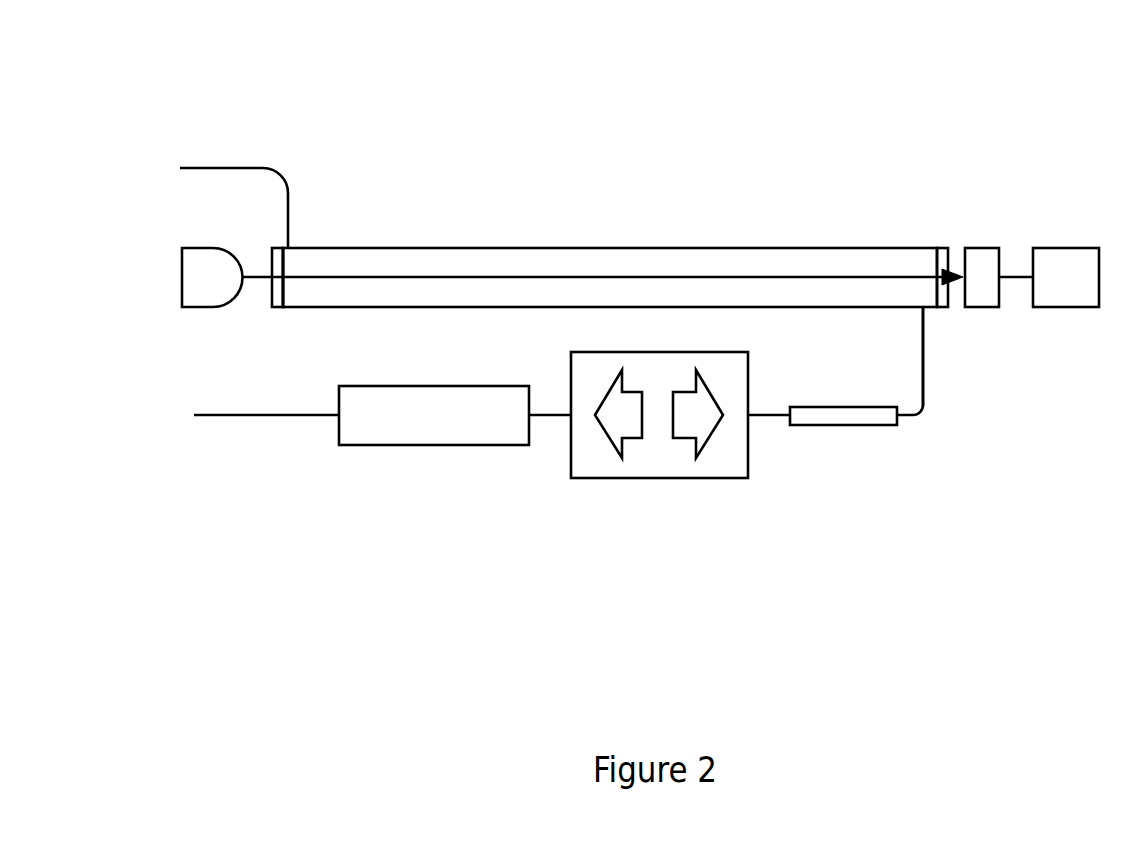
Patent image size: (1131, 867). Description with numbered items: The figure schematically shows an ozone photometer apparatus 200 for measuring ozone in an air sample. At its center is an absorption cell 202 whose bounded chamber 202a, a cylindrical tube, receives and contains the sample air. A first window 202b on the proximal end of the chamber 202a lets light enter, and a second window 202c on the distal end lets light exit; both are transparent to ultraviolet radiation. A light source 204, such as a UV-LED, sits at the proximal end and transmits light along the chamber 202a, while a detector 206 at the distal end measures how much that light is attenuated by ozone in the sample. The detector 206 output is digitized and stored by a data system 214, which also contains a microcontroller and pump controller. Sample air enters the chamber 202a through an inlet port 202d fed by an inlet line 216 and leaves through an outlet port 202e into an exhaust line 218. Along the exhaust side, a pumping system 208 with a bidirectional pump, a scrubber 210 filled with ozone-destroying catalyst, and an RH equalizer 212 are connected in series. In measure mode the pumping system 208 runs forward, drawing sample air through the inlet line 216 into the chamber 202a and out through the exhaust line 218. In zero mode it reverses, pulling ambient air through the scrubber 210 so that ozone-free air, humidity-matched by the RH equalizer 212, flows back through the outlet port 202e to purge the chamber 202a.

The ozone photometer apparatus 200 is at (548, 66).
The absorption cell 202 is at (405, 248).
The chamber 202a is at (555, 263).
The first window 202b is at (277, 292).
The second window 202c is at (945, 248).
The inlet port 202d is at (288, 248).
The outlet port 202e is at (927, 308).
The light source 204 is at (190, 248).
The detector 206 is at (980, 248).
The pumping system 208 is at (683, 478).
The scrubber 210 is at (443, 445).
The RH equalizer 212 is at (845, 425).
The data system 214 is at (1050, 307).
The inlet line 216 is at (213, 168).
The exhaust line 218 is at (926, 418).